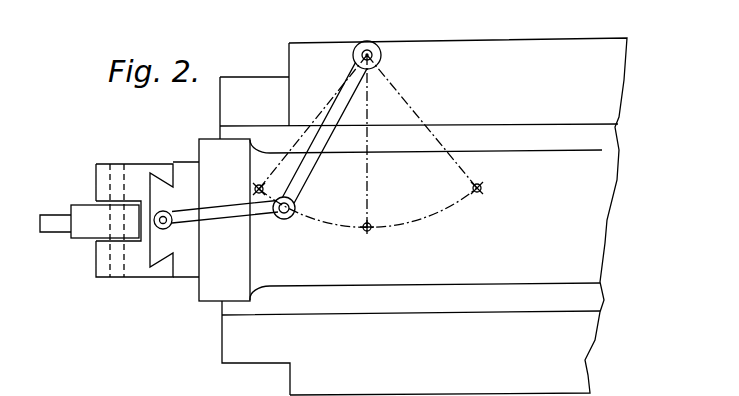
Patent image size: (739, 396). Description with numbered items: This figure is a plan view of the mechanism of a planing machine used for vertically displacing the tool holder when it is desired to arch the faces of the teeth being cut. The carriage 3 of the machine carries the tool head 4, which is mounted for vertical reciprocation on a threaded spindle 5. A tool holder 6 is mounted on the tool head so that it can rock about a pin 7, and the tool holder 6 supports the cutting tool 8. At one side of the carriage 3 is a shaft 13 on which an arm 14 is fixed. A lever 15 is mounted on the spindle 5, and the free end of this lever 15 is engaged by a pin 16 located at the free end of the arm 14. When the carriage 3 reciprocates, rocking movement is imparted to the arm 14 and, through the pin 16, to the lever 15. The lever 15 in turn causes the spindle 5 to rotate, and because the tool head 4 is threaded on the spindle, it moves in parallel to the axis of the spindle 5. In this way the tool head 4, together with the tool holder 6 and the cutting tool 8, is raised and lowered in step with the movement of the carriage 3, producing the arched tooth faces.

The carriage 3 is at (613, 181).
The tool head 4 is at (186, 168).
The threaded spindle 5 is at (160, 229).
The tool holder 6 is at (90, 236).
The pin 7 is at (117, 165).
The cutting tool 8 is at (55, 229).
The shaft 13 is at (379, 47).
The arm 14 is at (310, 178).
The lever 15 is at (234, 216).
The pin 16 is at (284, 220).